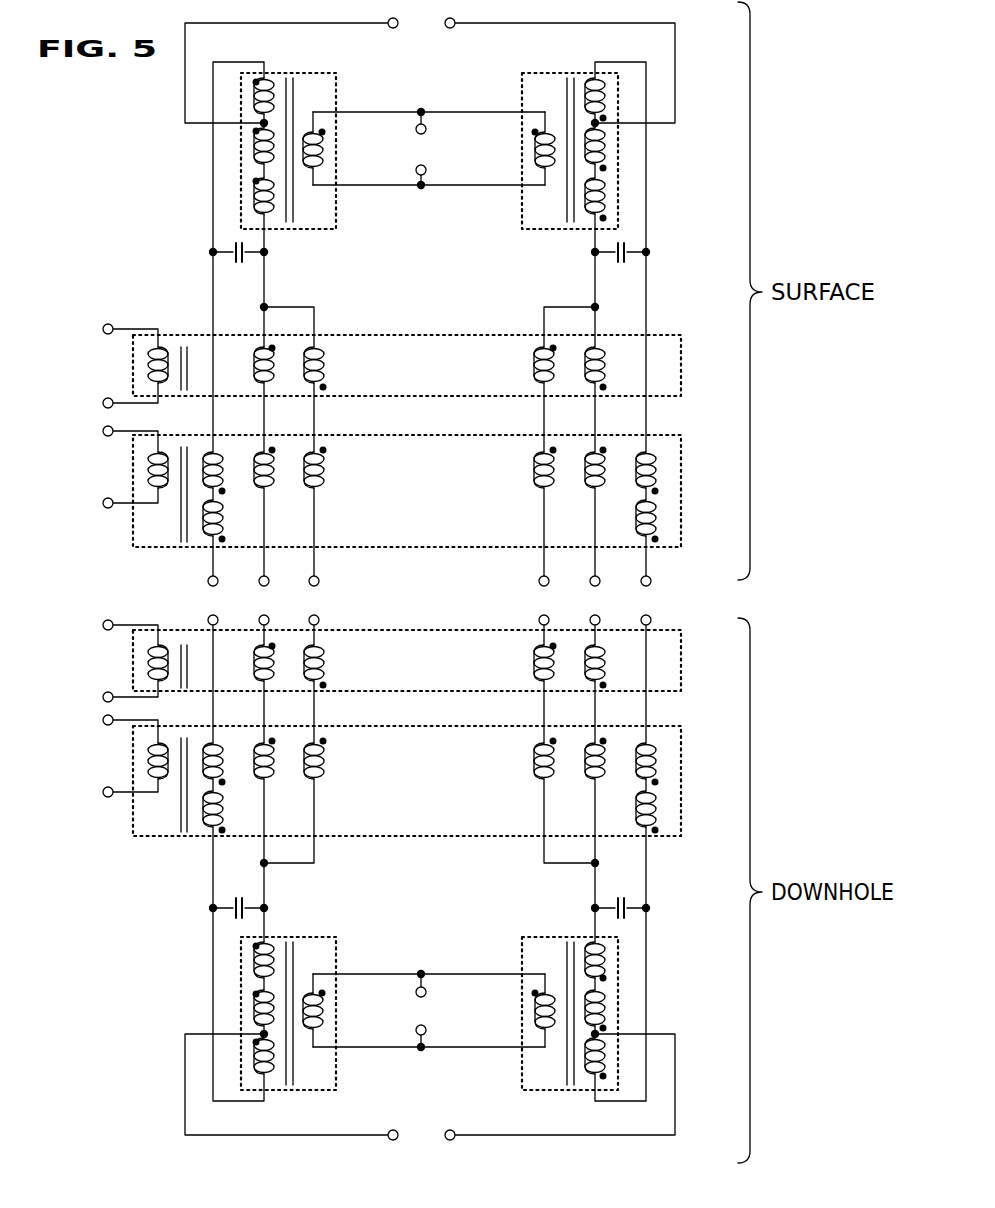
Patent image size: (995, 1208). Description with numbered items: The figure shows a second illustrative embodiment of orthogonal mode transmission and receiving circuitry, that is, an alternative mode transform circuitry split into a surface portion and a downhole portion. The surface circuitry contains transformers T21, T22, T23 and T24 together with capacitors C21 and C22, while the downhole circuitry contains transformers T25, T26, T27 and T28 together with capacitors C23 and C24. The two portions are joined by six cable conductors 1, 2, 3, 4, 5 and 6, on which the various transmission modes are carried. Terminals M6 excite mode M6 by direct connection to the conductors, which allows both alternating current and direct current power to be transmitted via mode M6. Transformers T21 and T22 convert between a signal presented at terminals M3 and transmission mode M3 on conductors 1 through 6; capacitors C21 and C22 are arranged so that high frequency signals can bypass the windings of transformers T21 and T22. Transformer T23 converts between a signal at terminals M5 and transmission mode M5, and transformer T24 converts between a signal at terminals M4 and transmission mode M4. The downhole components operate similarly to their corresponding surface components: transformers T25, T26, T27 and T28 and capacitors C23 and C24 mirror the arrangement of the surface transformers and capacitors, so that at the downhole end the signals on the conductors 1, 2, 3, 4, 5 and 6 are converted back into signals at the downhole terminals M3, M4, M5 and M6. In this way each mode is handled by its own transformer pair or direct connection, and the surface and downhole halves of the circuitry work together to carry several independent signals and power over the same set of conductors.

The transformer T21 is at (337, 88).
The transformer T22 is at (521, 88).
The transformer T23 is at (683, 378).
The transformer T24 is at (682, 483).
The transformer T25 is at (682, 681).
The transformer T26 is at (681, 775).
The transformer T27 is at (337, 952).
The transformer T28 is at (521, 952).
The capacitor C21 is at (238, 270).
The capacitor C22 is at (620, 270).
The capacitor C23 is at (238, 895).
The capacitor C24 is at (620, 895).
The terminals M3 is at (421, 579).
The terminals M4 is at (127, 611).
The terminals M5 is at (127, 513).
The terminals M6 is at (421, 579).
The conductor 1 is at (314, 600).
The conductor 2 is at (544, 600).
The conductor 3 is at (213, 600).
The conductor 4 is at (595, 600).
The conductor 5 is at (264, 600).
The conductor 6 is at (646, 600).